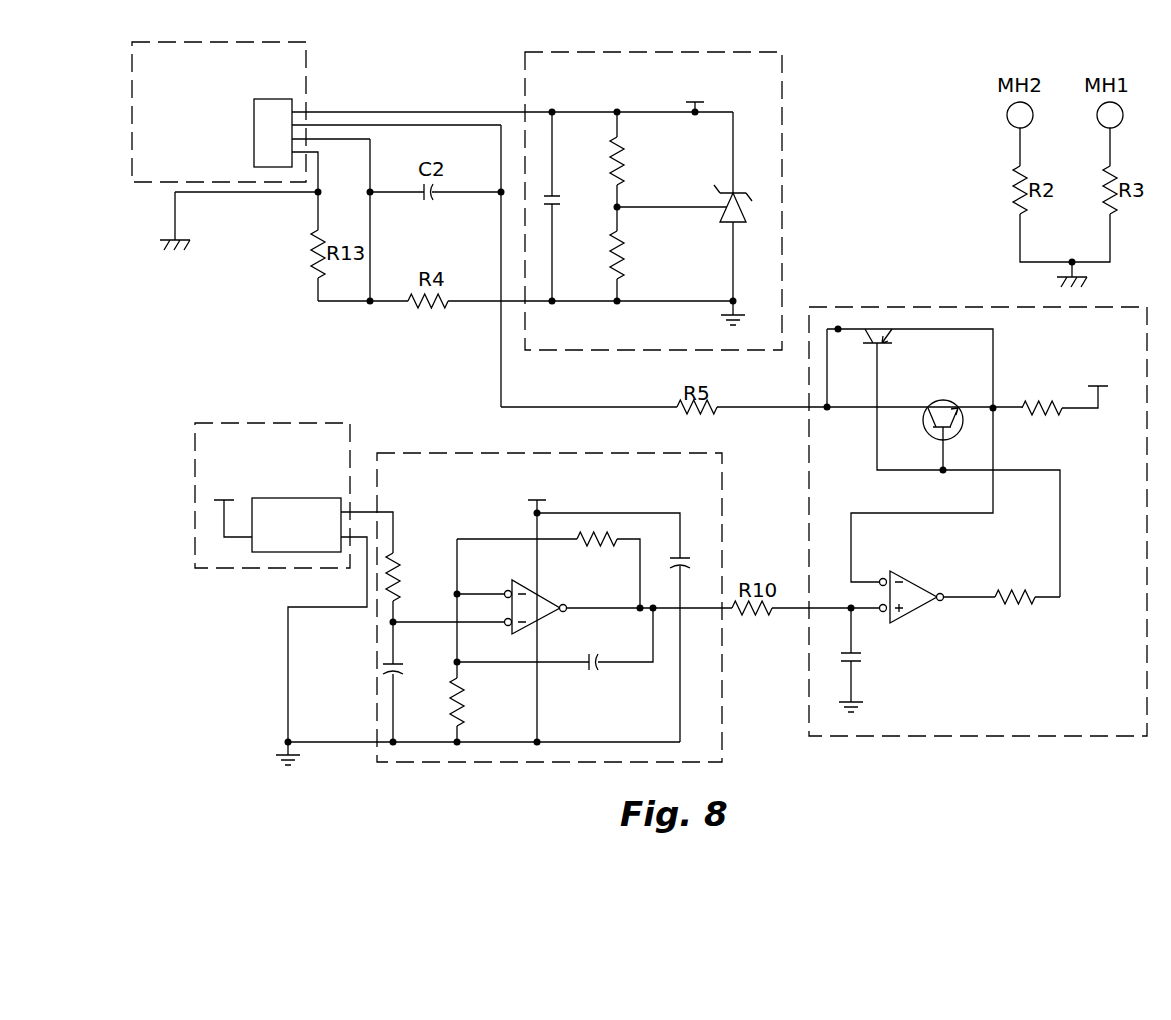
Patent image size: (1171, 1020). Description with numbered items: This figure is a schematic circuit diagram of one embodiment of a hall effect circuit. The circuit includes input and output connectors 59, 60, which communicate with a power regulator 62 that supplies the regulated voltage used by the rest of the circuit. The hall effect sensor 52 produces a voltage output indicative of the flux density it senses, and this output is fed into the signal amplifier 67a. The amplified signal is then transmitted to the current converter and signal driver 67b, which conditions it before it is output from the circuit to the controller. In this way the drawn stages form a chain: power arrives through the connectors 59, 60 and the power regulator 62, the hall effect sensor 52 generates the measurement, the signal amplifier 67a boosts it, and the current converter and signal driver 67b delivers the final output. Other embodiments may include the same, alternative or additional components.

The input connector 59 is at (264, 110).
The output connector 60 is at (307, 62).
The power regulator 62 is at (781, 62).
The hall effect sensor 52 is at (312, 423).
The signal amplifier 67a is at (533, 762).
The current converter and signal driver 67b is at (1003, 737).